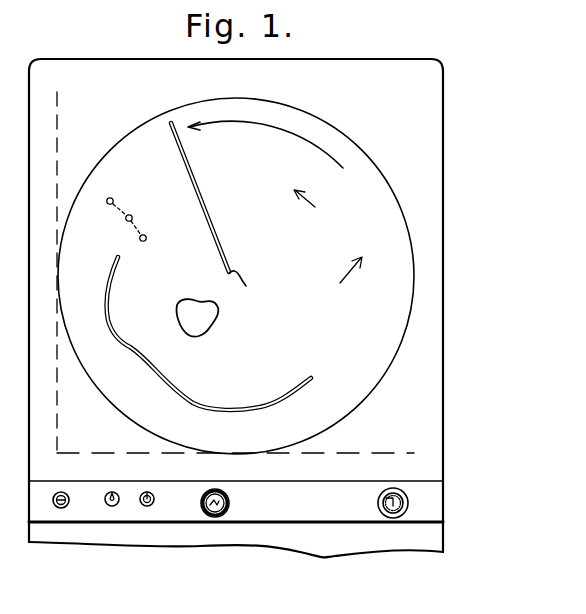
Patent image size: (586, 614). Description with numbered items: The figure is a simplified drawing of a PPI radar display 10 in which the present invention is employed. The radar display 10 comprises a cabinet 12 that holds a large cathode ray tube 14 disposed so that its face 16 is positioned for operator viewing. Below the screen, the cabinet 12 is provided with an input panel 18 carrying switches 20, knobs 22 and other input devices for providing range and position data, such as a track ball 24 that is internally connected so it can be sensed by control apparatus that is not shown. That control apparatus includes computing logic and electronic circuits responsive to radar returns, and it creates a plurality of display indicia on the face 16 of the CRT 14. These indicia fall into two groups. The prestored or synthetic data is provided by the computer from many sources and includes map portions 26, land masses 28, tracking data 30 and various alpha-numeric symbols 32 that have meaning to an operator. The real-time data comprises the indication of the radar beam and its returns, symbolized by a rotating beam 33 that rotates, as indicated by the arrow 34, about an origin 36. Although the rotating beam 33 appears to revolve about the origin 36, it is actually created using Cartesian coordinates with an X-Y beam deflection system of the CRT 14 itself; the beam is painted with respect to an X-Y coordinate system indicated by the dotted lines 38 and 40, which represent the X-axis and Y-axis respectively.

The radar display 10 is at (455, 231).
The cabinet 12 is at (434, 375).
The cathode ray tube 14 is at (376, 167).
The face 16 is at (373, 229).
The input panel 18 is at (283, 508).
The switches 20 is at (149, 491).
The knobs 22 is at (222, 490).
The track ball 24 is at (378, 502).
The map portions 26 is at (132, 342).
The land masses 28 is at (211, 327).
The tracking data 30 is at (122, 227).
The alpha-numeric symbols 32 is at (335, 258).
The rotating beam 33 is at (193, 169).
The arrow 34 is at (298, 133).
The origin 36 is at (247, 289).
The X-axis 38 is at (364, 453).
The Y-axis 40 is at (58, 151).